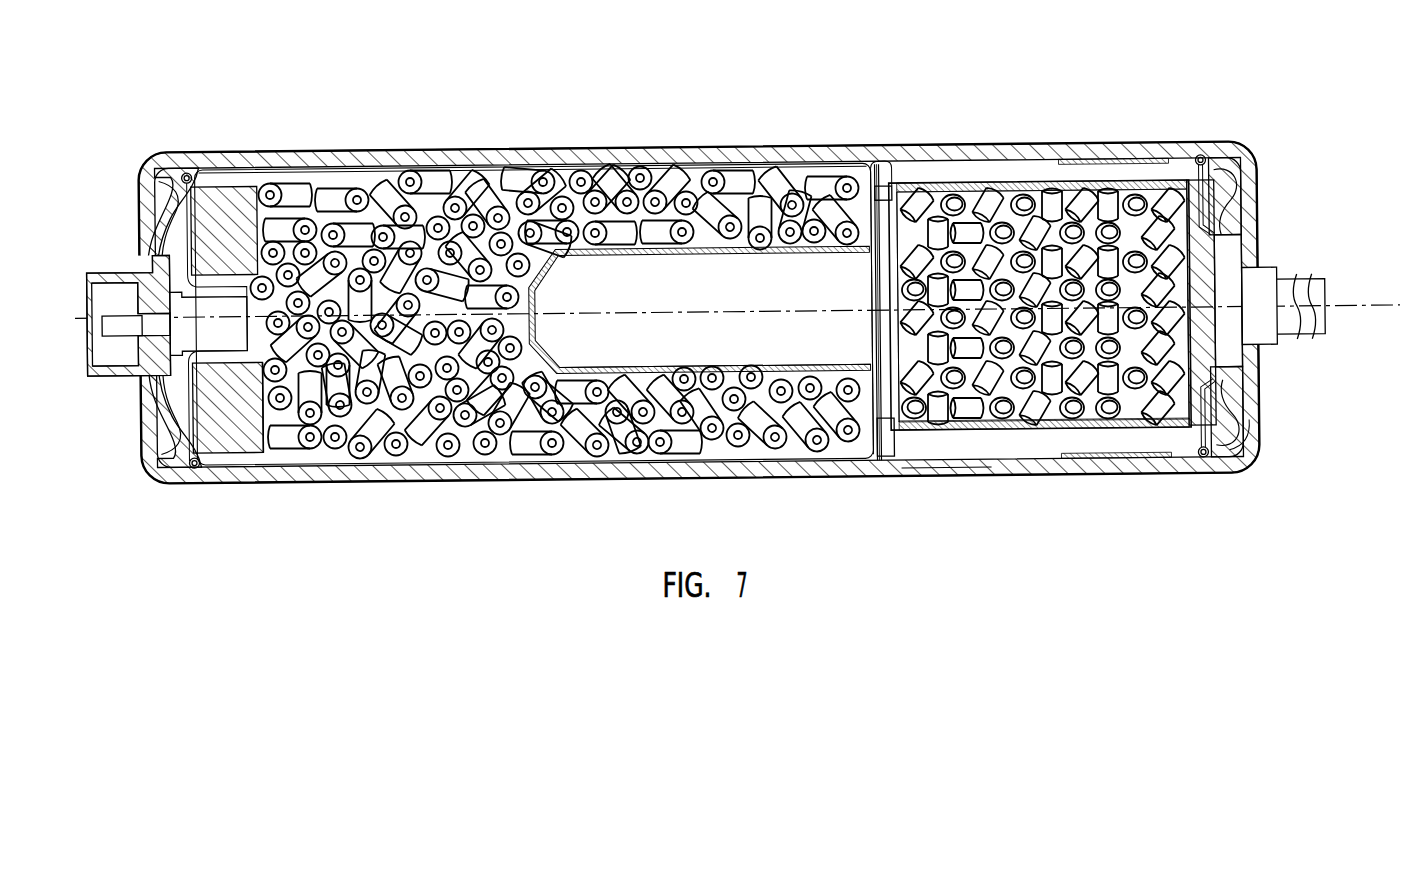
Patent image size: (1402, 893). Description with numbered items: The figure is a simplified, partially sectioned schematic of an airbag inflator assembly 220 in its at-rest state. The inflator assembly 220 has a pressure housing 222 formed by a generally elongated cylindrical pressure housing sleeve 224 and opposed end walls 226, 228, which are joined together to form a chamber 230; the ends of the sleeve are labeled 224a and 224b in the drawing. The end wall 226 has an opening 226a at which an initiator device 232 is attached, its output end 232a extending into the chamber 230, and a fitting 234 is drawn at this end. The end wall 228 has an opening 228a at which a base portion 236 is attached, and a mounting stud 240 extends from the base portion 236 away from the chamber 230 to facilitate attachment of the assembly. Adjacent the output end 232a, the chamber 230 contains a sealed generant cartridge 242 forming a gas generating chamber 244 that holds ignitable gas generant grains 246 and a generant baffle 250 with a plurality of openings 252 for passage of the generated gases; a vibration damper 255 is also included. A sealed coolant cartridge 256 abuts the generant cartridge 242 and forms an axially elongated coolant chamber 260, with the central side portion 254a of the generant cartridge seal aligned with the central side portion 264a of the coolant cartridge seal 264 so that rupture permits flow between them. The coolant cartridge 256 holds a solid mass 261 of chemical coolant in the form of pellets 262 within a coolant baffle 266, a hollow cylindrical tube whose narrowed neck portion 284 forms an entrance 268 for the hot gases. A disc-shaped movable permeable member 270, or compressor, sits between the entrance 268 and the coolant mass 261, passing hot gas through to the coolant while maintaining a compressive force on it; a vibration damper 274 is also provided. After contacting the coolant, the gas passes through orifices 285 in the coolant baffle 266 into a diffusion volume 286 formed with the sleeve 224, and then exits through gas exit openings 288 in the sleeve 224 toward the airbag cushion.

The inflator assembly 220 is at (652, 137).
The pressure housing 222 is at (352, 147).
The pressure housing sleeve 224 is at (485, 148).
The first end of liner 224a is at (152, 151).
The second end of liner 224b is at (1252, 167).
The end wall 226 is at (141, 224).
The opening 226a is at (139, 374).
The end wall 228 is at (1254, 239).
The opening 228a is at (1243, 354).
The chamber 230 is at (177, 390).
The initiator device 232 is at (212, 292).
The output end 232a is at (249, 450).
The inlet fitting 234 is at (113, 259).
The base portion 236 is at (1260, 328).
The mounting stud 240 is at (1317, 296).
The sealed generant cartridge 242 is at (290, 159).
The gas generating chamber 244 is at (468, 405).
The gas generant grains 246 is at (618, 427).
The generant baffle 250 is at (672, 367).
The openings 252 is at (611, 367).
The central side portion 254a is at (885, 300).
The vibration damper 255 is at (219, 427).
The sealed coolant cartridge 256 is at (1086, 194).
The coolant chamber 260 is at (1118, 195).
The solid mass 261 is at (1194, 437).
The pellets 262 is at (1174, 193).
The coolant cartridge seal 264 is at (879, 232).
The central side portion 264a is at (876, 343).
The coolant baffle 266 is at (1016, 436).
The entrance 268 is at (846, 196).
The movable permeable member 270 is at (887, 457).
The vibration damper 274 is at (1257, 416).
The narrowed neck portion 284 is at (869, 180).
The orifices 285 is at (1156, 444).
The diffusion volume 286 is at (999, 453).
The gas exit openings 288 is at (935, 472).